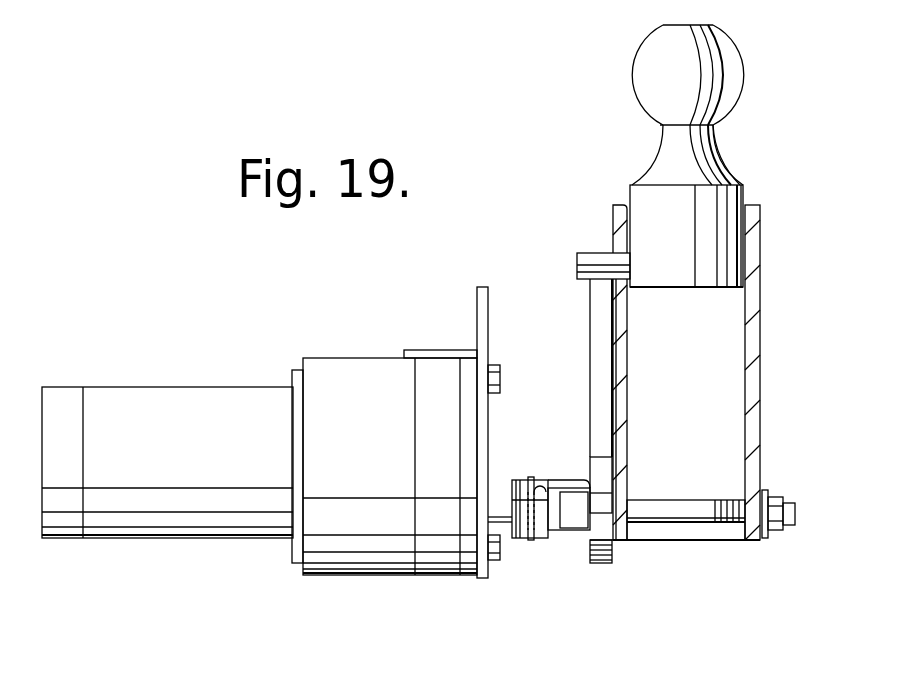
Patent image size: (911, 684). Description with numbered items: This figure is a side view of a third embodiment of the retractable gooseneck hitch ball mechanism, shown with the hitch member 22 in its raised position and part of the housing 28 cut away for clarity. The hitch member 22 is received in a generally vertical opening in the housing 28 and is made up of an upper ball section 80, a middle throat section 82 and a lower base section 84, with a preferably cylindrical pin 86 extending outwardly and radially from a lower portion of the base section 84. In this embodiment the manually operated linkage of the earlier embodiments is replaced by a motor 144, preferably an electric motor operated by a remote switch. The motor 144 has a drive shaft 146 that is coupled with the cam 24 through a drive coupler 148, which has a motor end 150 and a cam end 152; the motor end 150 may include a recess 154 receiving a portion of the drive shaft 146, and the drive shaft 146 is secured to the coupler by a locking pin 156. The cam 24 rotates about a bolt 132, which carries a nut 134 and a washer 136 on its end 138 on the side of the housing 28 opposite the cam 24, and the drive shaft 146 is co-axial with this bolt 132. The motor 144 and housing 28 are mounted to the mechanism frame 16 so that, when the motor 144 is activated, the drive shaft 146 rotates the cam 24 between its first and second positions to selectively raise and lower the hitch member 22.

The frame 16 is at (476, 320).
The hitch member 22 is at (640, 192).
The cam 24 is at (597, 357).
The housing 28 is at (752, 332).
The upper ball section 80 is at (723, 78).
The middle throat section 82 is at (667, 148).
The lower base section 84 is at (718, 203).
The pin 86 is at (588, 260).
The bolt 132 is at (678, 513).
The nut 134 is at (770, 492).
The washer 136 is at (772, 538).
The end 138 is at (795, 513).
The motor 144 is at (320, 368).
The drive shaft 146 is at (499, 482).
The drive coupler 148 is at (553, 540).
The motor end 150 is at (517, 540).
The cam end 152 is at (583, 540).
The recess 154 is at (525, 478).
The locking pin 156 is at (528, 540).